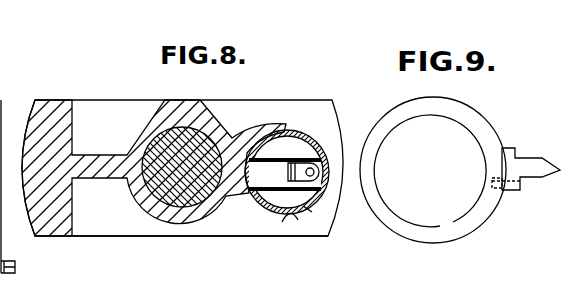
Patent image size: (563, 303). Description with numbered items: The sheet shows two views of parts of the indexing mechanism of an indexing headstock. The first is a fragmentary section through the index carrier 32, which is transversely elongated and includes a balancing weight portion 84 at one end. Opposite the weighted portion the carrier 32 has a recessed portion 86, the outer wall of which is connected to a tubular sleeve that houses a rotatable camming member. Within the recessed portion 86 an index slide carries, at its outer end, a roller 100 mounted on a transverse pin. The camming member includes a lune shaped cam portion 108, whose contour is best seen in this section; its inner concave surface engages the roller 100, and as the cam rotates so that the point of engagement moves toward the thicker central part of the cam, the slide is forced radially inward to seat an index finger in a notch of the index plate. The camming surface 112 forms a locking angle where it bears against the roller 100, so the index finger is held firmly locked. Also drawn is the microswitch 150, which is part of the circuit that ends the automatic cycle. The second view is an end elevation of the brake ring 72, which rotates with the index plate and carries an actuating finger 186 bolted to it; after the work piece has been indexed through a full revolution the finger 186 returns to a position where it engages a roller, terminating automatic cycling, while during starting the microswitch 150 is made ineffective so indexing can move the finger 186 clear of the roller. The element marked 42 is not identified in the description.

In FIG. 8, the microswitch 150 is at (0, 102).
In FIG. 8, the balancing weight portion 84 is at (53, 115).
In FIG. 8, the cylinder 42 is at (210, 140).
In FIG. 8, the lune shaped cam portion 108 is at (322, 138).
In FIG. 8, the roller 100 is at (309, 158).
In FIG. 8, the recessed portion 86 is at (296, 222).
In FIG. 8, the camming surface 112 is at (308, 208).
In FIG. 8, the carrier 32 is at (172, 237).
In FIG. 9, the brake ring 72 is at (492, 137).
In FIG. 9, the actuating finger 186 is at (532, 168).